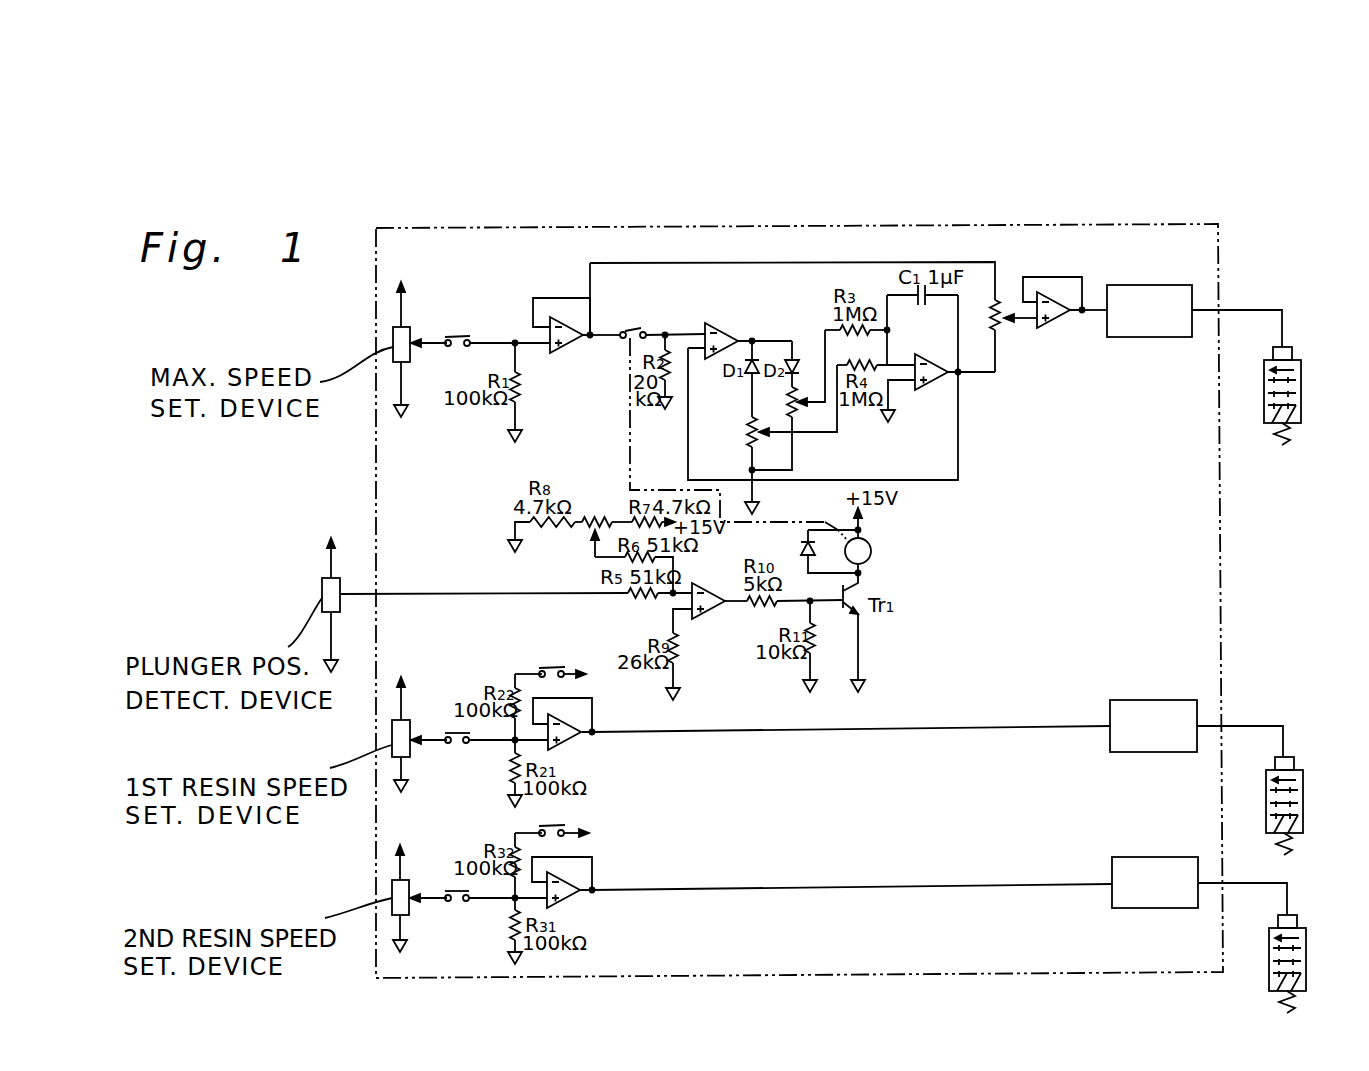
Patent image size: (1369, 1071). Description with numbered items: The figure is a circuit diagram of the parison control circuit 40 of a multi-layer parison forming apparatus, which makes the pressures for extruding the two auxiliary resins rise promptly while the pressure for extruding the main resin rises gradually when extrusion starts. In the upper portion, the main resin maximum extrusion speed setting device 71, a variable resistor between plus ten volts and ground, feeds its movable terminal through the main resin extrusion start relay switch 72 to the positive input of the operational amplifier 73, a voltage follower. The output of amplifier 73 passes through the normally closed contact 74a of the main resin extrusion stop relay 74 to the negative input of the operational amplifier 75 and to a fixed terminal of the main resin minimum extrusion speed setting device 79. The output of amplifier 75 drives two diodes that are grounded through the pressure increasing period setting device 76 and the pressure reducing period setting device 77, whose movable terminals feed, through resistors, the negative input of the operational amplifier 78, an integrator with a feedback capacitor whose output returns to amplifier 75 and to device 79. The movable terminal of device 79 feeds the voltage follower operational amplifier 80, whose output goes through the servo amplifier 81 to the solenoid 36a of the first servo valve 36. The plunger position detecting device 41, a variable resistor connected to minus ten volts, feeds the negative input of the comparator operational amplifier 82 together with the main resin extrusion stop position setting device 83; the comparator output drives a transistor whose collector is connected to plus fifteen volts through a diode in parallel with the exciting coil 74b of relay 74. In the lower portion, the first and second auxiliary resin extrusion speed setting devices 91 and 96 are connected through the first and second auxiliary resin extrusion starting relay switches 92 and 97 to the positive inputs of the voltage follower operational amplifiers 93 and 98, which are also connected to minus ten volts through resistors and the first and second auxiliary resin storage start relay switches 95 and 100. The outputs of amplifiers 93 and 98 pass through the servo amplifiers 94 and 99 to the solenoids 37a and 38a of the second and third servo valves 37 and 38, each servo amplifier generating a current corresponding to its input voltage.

The parison control circuit 40 is at (1226, 278).
The plunger position detecting device 41 is at (340, 582).
The main resin maximum extrusion speed setting device 71 is at (411, 333).
The main resin extrusion start relay switch 72 is at (467, 338).
The operational amplifier 73 is at (580, 345).
The main resin extrusion stop relay 74 is at (641, 324).
The normally closed contact 74a is at (623, 340).
The exciting coil 74b is at (872, 550).
The operational amplifier 75 is at (715, 332).
The pressure increasing period setting device 76 is at (746, 420).
The pressure reducing period setting device 77 is at (795, 408).
The operational amplifier 78 is at (926, 390).
The main resin minimum extrusion speed setting device 79 is at (1001, 338).
The operational amplifier 80 is at (1056, 328).
The servo amplifier 81 is at (1145, 338).
The operational amplifier 82 is at (713, 619).
The main resin extrusion stop position setting device 83 is at (583, 531).
The first auxiliary resin extrusion speed setting device 91 is at (412, 728).
The first auxiliary resin extrusion starting relay switch 92 is at (457, 745).
The operational amplifier 93 is at (575, 746).
The servo amplifier 94 is at (1147, 700).
The first auxiliary resin storage start relay switch 95 is at (552, 665).
The second auxiliary resin extrusion speed setting device 96 is at (412, 888).
The second auxiliary resin extrusion starting relay switch 97 is at (457, 902).
The operational amplifier 98 is at (573, 905).
The servo amplifier 99 is at (1160, 857).
The second auxiliary resin storage start relay switch 100 is at (556, 826).
The first servo valve 36 is at (1312, 380).
The solenoid 36a is at (1295, 358).
The second servo valve 37 is at (1316, 787).
The solenoid 37a is at (1296, 758).
The third servo valve 38 is at (1319, 942).
The solenoid 38a is at (1299, 915).